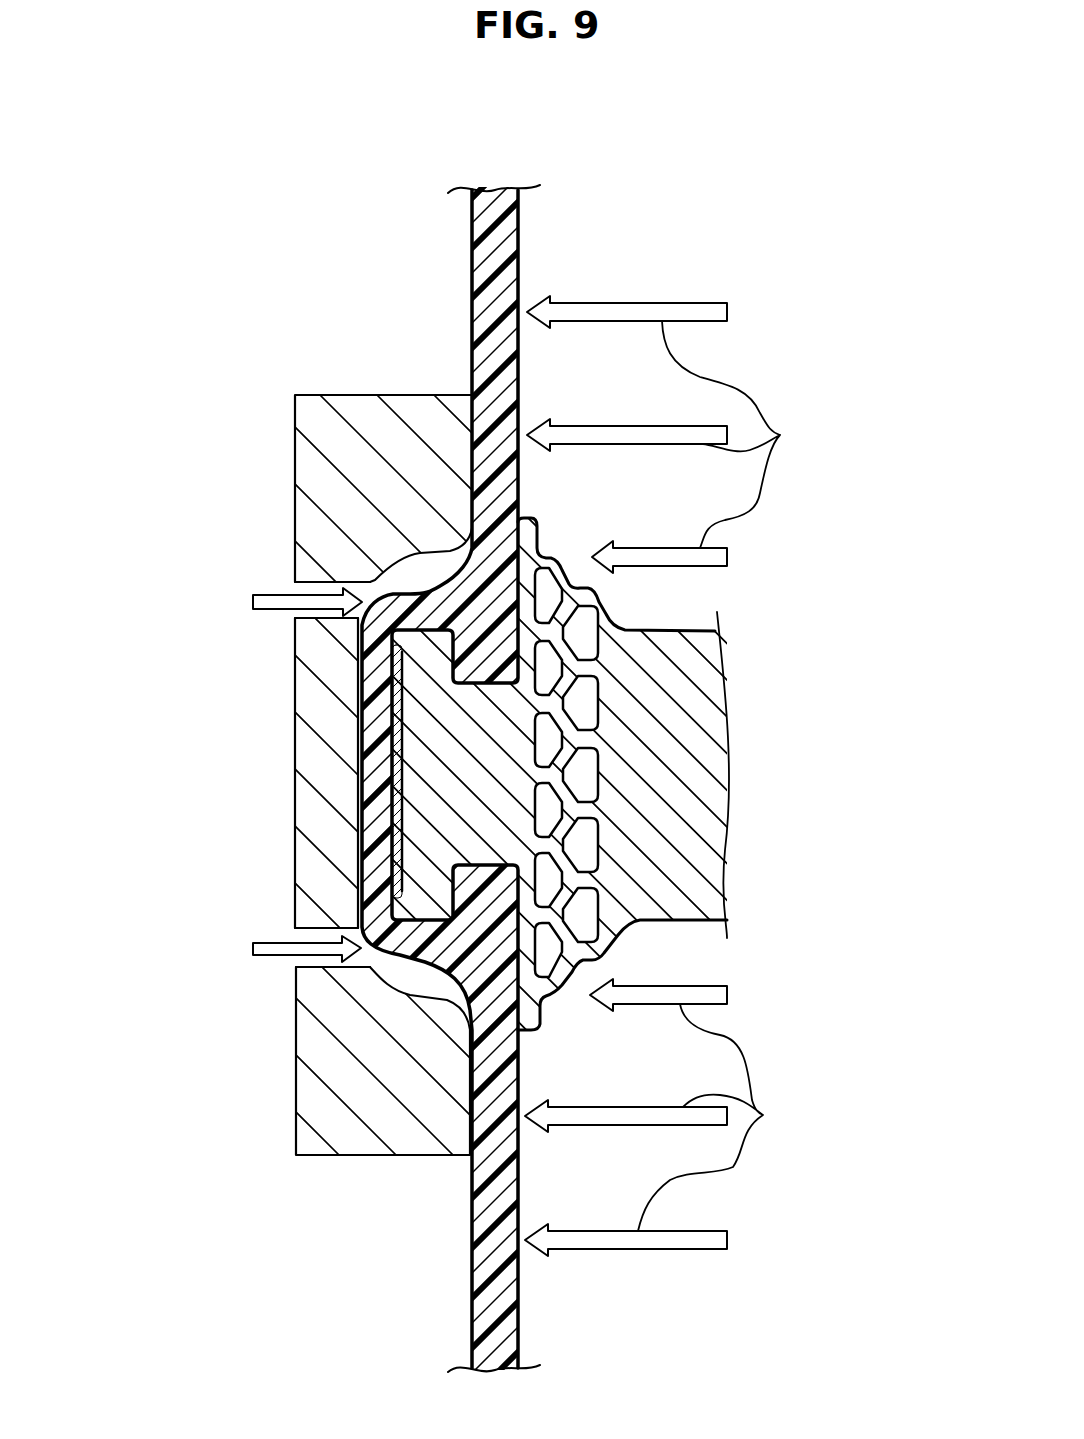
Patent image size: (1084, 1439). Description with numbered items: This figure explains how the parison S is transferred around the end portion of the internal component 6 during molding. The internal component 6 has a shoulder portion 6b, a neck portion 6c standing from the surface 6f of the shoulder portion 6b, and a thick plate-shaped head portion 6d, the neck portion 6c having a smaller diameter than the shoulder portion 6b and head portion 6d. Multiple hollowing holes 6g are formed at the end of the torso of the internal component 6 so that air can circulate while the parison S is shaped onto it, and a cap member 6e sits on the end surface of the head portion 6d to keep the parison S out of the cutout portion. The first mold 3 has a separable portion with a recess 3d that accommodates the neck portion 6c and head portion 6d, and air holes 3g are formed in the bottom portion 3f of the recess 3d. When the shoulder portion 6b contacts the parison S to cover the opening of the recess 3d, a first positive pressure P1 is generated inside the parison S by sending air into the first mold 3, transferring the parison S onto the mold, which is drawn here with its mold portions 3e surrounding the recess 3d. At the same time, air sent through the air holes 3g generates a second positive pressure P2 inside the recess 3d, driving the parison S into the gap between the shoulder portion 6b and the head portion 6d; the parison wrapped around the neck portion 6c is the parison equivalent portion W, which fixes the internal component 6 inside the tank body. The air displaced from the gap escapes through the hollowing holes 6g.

The parison S is at (506, 244).
The first mold 3 is at (347, 395).
The block portion 3e is at (445, 540).
The recess 3d is at (414, 570).
The bottom portion 3f is at (385, 835).
The air holes 3g is at (350, 612).
The parison equivalent portion W is at (407, 972).
The positive pressure (second positive pressure) P2 is at (300, 590).
The positive pressure (first positive pressure) P1 is at (680, 776).
The internal component 6 is at (681, 598).
The surface of the shoulder portion 6f is at (512, 498).
The shoulder portion 6b is at (519, 1032).
The hollowing holes 6g is at (547, 813).
The neck portion 6c is at (472, 777).
The head portion 6d is at (433, 653).
The cap member 6e is at (397, 730).